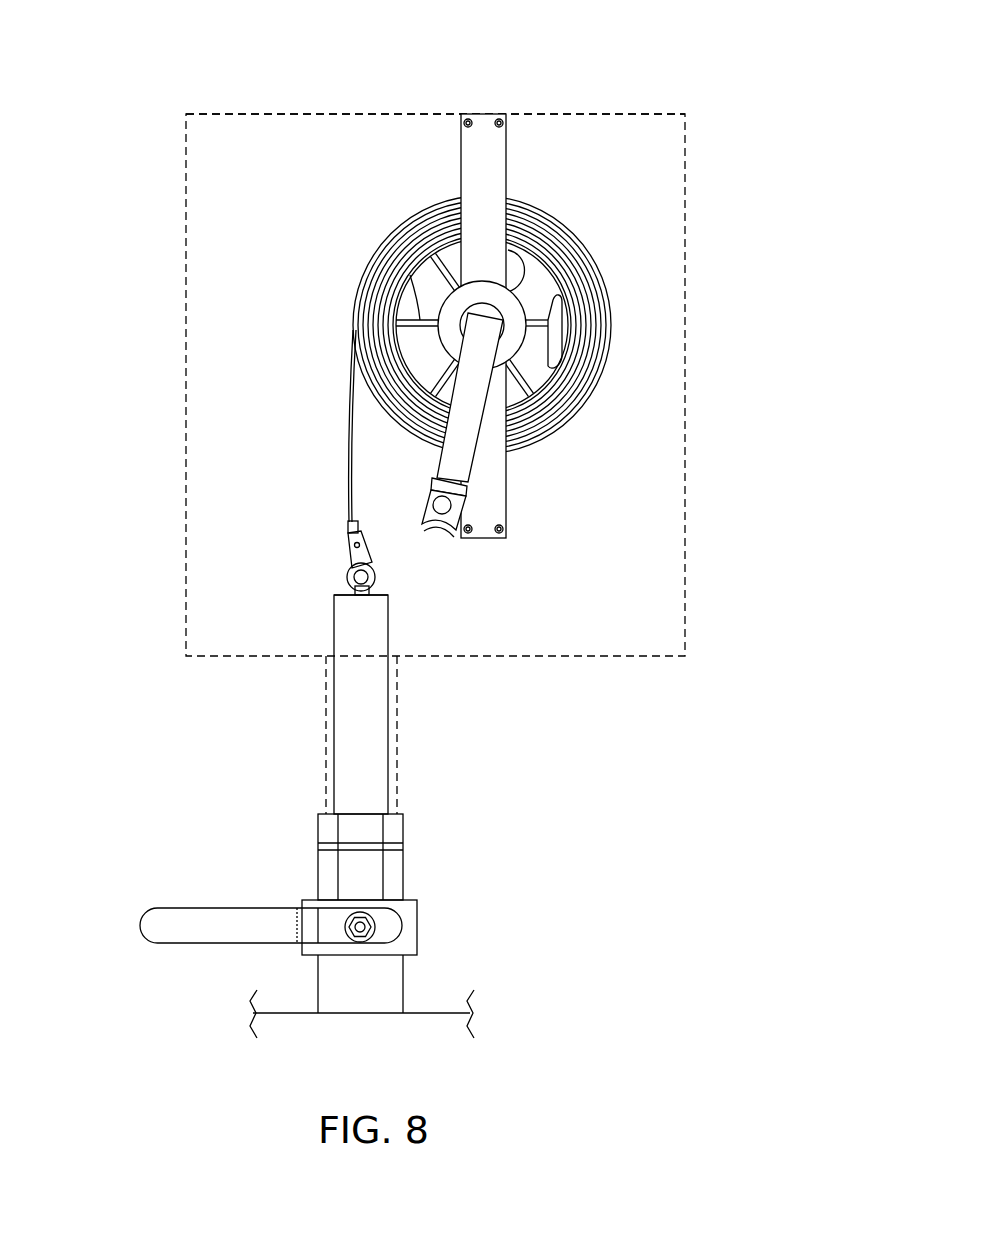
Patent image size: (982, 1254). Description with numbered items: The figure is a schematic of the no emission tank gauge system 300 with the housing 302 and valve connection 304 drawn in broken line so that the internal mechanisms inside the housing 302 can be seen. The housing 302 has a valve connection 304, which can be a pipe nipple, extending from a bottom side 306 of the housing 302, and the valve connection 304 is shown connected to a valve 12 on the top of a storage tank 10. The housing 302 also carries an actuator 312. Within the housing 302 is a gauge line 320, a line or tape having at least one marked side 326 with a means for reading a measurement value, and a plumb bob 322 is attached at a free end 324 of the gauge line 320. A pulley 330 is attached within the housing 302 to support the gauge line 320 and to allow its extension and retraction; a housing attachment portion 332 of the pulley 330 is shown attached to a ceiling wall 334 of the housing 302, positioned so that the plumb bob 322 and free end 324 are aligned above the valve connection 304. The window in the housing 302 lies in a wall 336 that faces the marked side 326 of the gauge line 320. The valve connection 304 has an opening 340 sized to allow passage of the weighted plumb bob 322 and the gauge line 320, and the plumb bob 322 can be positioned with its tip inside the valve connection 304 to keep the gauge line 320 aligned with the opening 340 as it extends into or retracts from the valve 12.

The no emission tank gauge system 300 is at (148, 120).
The housing 302 is at (532, 287).
The valve connection 304 is at (398, 785).
The bottom side 306 is at (643, 656).
The actuator 312 is at (483, 440).
The gauge line 320 is at (532, 261).
The plumb bob 322 is at (365, 712).
The free end 324 is at (350, 555).
The marked side 326 is at (350, 445).
The pulley 330 is at (385, 235).
The housing attachment portion 332 is at (493, 165).
The ceiling wall 334 is at (638, 112).
The wall 336 is at (186, 358).
The opening 340 is at (393, 658).
The valve 12 is at (420, 924).
The storage tank 10 is at (423, 1013).